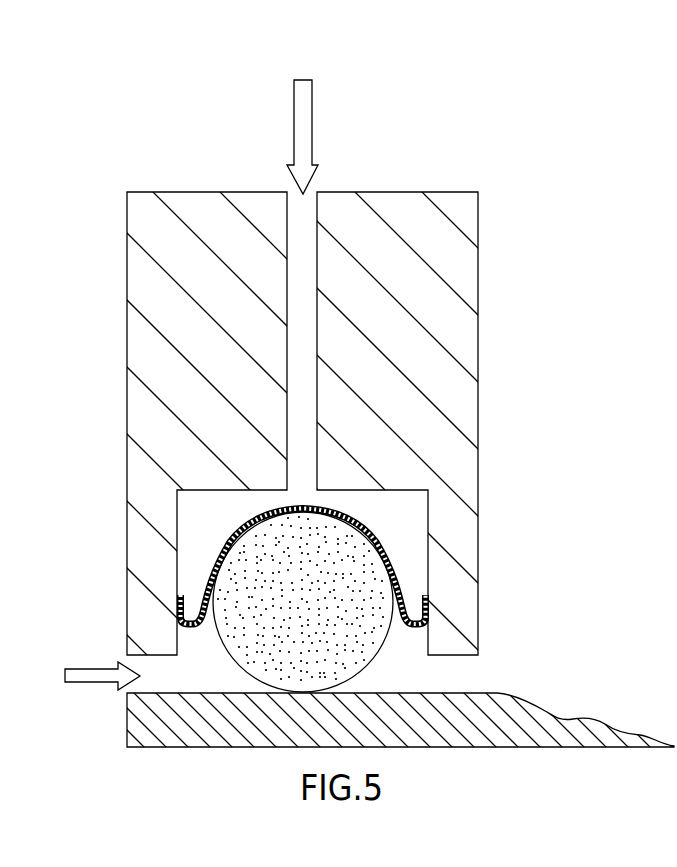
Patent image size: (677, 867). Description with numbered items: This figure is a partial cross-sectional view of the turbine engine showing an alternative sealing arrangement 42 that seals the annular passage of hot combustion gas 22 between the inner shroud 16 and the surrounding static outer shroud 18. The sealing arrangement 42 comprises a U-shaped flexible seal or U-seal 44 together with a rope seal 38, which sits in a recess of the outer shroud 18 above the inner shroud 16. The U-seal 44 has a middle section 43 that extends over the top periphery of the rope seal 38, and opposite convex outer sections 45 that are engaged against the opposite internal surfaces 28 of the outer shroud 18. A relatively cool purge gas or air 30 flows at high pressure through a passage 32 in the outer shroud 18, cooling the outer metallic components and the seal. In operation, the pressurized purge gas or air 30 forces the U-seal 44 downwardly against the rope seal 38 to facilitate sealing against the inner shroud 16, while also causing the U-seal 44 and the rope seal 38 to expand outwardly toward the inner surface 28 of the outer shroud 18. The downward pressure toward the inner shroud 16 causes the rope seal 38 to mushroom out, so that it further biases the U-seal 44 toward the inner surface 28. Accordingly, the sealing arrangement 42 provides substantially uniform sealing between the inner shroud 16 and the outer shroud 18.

The sealing arrangement 42 is at (166, 84).
The purge gas or air 30 is at (313, 120).
The inner surface of the outer shroud 28 is at (178, 534).
The outer shroud 18 is at (460, 420).
The passage 32 is at (298, 405).
The rope seal 38 is at (366, 666).
The U-seal 44 is at (367, 532).
The middle section 43 is at (287, 512).
The convex outer sections 45 is at (191, 628).
The hot combustion gas 22 is at (108, 685).
The inner shroud 16 is at (210, 745).